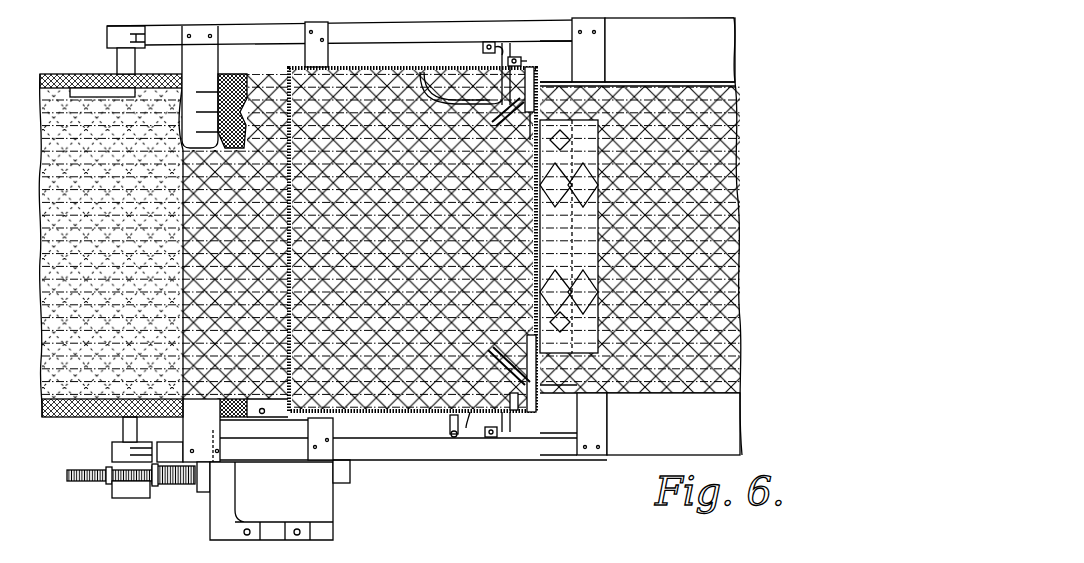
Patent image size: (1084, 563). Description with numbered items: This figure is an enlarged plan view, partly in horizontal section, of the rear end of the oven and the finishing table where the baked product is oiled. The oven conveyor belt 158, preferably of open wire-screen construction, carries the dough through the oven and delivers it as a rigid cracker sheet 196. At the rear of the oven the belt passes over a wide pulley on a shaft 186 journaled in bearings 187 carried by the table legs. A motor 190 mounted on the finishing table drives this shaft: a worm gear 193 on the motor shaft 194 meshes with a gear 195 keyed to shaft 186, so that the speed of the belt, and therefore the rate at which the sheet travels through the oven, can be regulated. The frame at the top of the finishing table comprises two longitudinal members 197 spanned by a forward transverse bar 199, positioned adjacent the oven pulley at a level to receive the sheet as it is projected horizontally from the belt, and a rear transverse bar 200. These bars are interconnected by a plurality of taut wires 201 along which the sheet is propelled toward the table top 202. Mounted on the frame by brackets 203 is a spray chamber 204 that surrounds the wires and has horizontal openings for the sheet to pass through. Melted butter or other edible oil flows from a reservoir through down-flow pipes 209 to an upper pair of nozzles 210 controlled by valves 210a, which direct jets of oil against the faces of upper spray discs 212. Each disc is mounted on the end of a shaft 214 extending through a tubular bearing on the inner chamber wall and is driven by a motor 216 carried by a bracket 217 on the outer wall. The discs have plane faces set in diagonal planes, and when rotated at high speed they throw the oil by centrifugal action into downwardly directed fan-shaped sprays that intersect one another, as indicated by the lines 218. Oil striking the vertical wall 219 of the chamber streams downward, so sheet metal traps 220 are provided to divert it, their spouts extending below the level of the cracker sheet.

The oven conveyor belt 158 is at (83, 78).
The shaft 186 is at (123, 432).
The bearings 187 is at (138, 44).
The motor 190 is at (266, 469).
The worm gear 193 is at (110, 488).
The motor shaft 194 is at (173, 485).
The gear 195 is at (78, 474).
The rigid cracker sheet 196 is at (58, 143).
The longitudinal members 197 is at (362, 38).
The forward transverse bar 199 is at (216, 52).
The rear transverse bar 200 is at (595, 66).
The taut wires 201 is at (250, 75).
The table top 202 is at (718, 62).
The brackets 203 is at (305, 32).
The spray chamber 204 is at (397, 425).
The down-flow pipes 209 is at (483, 43).
The upper nozzles 210 is at (450, 50).
The valves 210a is at (508, 60).
The upper spray discs 212 is at (436, 55).
The shaft 214 is at (545, 124).
The motor 216 is at (569, 238).
The bracket 217 is at (569, 236).
The lines 218 is at (432, 186).
The vertical wall 219 is at (540, 82).
The sheet metal traps 220 is at (532, 70).